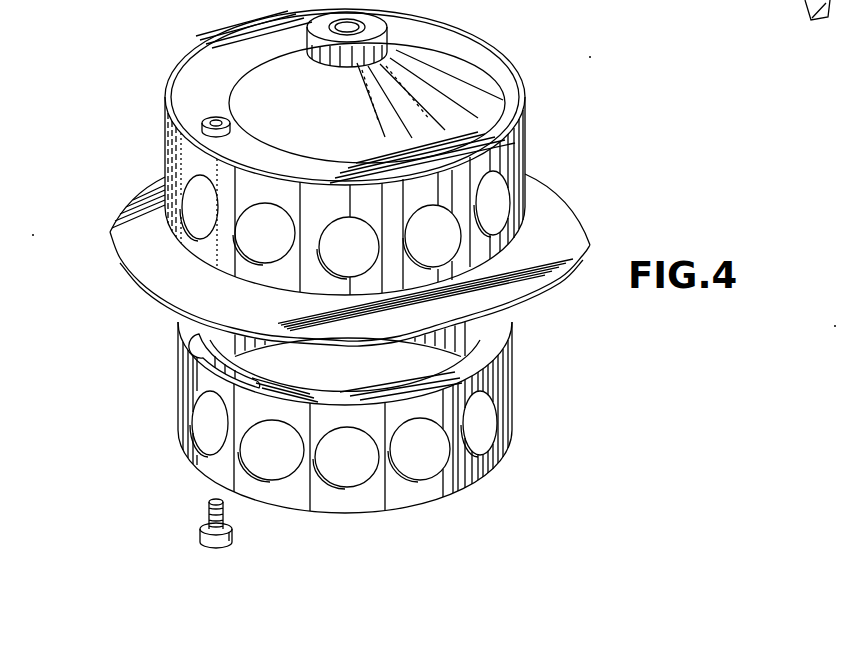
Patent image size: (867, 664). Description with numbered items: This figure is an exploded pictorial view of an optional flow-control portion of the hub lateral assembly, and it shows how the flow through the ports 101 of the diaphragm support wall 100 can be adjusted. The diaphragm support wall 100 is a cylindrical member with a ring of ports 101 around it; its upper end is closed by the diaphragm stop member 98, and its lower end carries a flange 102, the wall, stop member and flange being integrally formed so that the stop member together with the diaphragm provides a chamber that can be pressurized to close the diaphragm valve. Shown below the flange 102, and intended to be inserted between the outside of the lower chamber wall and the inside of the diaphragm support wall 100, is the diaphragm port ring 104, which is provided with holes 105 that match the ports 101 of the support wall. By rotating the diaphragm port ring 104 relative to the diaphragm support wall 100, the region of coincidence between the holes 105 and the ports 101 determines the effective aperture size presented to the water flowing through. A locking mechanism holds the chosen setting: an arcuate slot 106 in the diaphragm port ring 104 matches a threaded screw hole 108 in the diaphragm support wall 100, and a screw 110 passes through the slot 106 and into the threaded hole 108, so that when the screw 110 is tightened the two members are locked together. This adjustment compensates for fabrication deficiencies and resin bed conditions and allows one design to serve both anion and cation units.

The diaphragm stop member 98 is at (501, 39).
The diaphragm support wall 100 is at (520, 156).
The ports 101 is at (249, 240).
The flange 102 is at (567, 217).
The diaphragm port ring 104 is at (490, 347).
The holes 105 is at (421, 463).
The arcuate slot 106 is at (217, 364).
The threaded screw hole 108 is at (201, 121).
The screw 110 is at (203, 515).